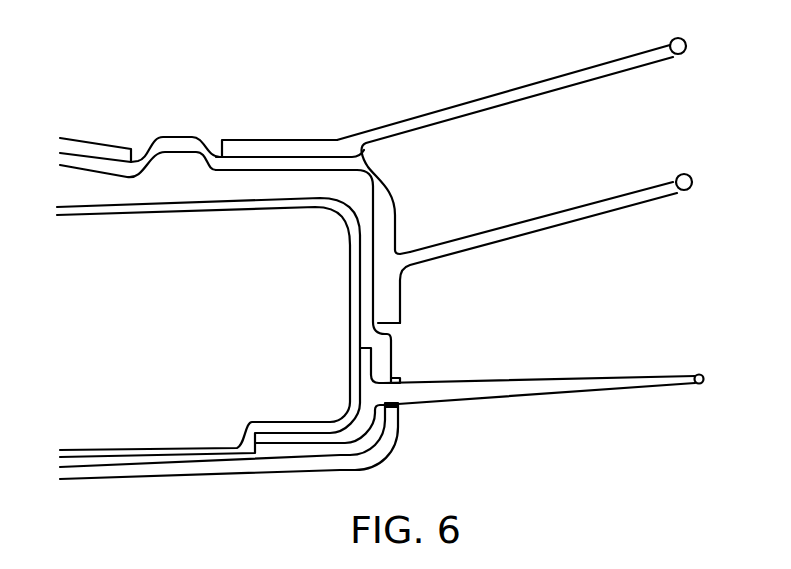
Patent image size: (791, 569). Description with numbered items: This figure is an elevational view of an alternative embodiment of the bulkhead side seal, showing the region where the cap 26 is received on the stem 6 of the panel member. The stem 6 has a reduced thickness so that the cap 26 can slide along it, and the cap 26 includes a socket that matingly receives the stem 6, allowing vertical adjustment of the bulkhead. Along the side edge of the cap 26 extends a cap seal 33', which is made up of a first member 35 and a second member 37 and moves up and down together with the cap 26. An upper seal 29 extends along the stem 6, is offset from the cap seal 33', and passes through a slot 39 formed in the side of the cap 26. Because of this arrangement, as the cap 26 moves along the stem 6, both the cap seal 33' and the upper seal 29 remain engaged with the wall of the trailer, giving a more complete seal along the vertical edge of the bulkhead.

The cap 26 is at (202, 146).
The cap seal 33' is at (503, 92).
The first member 35 is at (563, 78).
The second member 37 is at (583, 210).
The slot 39 is at (413, 385).
The upper seal 29 is at (612, 393).
The stem 6 is at (268, 425).